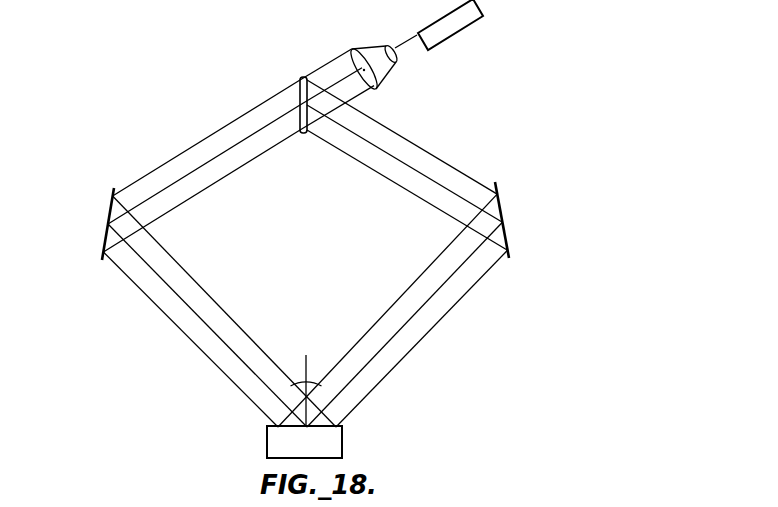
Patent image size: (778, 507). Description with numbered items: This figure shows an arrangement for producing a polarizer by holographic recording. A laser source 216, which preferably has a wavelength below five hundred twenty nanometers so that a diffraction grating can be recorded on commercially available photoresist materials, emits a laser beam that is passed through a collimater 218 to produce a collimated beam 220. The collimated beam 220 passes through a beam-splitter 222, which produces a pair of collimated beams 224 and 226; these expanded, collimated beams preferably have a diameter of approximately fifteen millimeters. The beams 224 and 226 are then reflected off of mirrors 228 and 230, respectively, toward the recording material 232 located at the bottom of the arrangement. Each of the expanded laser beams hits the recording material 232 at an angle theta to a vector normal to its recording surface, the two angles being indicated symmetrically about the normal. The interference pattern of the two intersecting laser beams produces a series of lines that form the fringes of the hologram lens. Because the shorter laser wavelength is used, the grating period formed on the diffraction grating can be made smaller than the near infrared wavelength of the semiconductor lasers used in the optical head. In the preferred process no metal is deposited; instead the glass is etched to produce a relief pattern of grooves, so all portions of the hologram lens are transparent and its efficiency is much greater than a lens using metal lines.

The laser source 216 is at (467, 27).
The collimater 218 is at (356, 48).
The collimated beam 220 is at (338, 57).
The beam-splitter 222 is at (301, 76).
The collimated beam 224 is at (217, 131).
The collimated beam 226 is at (417, 145).
The mirror 228 is at (109, 212).
The mirror 230 is at (499, 197).
The recording material 232 is at (243, 452).